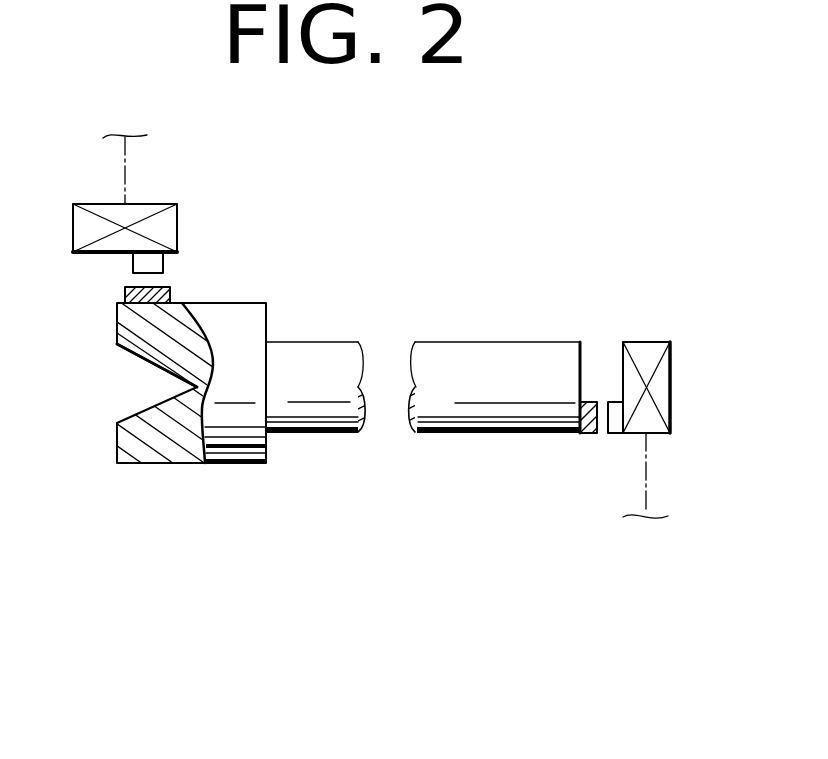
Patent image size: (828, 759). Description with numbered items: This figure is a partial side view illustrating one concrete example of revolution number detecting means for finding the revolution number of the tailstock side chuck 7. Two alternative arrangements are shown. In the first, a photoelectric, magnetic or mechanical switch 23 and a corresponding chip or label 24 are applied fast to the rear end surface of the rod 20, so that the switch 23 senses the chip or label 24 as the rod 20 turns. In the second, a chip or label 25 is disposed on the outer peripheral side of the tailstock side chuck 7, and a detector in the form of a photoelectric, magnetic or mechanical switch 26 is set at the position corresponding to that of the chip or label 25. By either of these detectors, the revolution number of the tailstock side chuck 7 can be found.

The tailstock side chuck 7 is at (230, 463).
The rod 20 is at (517, 365).
The photoelectric, magnetic or mechanical switch 23 is at (663, 380).
The chip or label 24 is at (587, 433).
The chip or label 25 is at (170, 292).
The photoelectric, magnetic or mechanical switch 26 is at (167, 223).